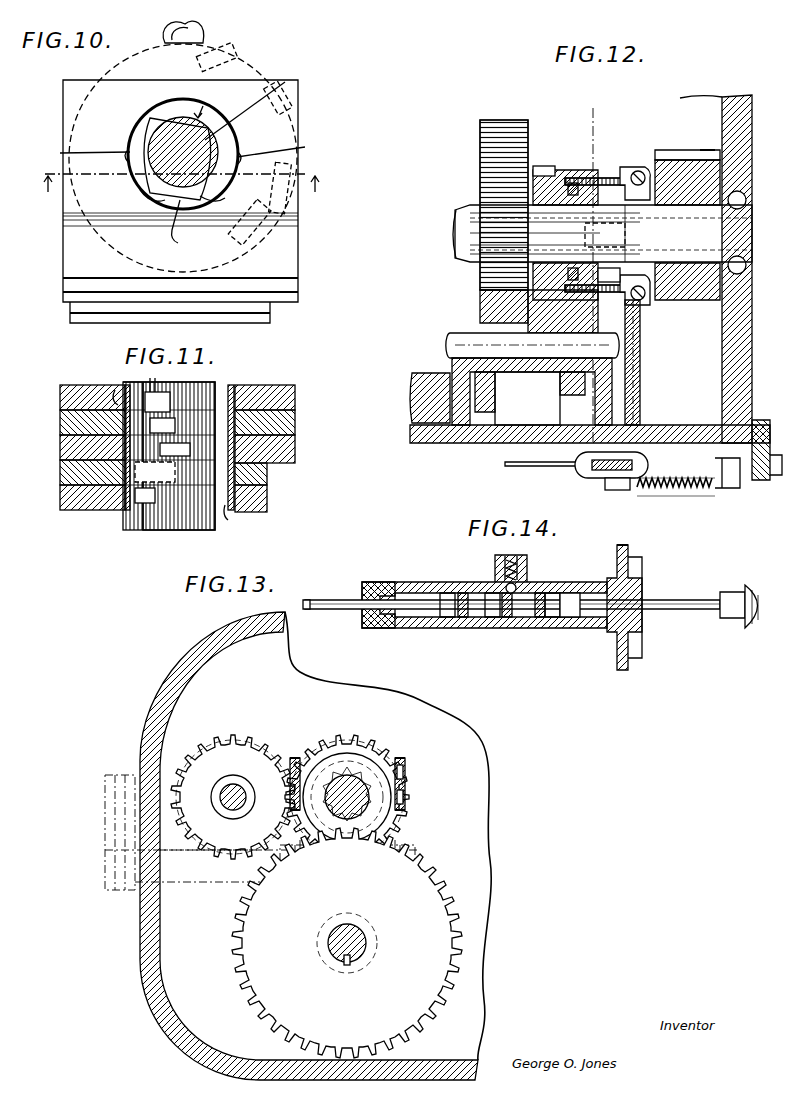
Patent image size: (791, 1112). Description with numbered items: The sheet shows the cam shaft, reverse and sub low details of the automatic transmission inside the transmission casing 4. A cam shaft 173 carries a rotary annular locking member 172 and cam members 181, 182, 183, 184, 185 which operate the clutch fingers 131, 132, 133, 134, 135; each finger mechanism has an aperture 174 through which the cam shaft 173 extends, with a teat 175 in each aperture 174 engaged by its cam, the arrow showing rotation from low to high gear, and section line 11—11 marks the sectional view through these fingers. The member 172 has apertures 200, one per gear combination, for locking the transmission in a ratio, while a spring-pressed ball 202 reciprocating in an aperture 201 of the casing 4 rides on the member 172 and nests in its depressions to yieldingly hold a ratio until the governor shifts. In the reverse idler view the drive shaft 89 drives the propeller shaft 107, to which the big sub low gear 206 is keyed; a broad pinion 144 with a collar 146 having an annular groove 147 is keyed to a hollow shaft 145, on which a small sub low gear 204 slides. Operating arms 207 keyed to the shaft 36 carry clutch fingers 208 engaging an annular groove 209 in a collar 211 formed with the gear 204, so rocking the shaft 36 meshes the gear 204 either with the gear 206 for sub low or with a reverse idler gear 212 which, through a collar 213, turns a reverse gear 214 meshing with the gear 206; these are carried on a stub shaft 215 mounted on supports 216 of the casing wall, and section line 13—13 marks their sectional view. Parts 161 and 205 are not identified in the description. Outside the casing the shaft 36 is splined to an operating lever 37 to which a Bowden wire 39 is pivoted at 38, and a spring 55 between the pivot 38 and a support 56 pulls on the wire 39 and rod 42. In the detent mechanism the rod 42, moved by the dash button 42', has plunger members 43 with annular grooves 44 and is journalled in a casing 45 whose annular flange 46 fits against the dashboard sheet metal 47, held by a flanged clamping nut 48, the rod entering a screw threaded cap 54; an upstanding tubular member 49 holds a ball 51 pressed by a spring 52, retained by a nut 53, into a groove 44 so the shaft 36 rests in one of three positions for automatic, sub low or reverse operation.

In FIG. 12, the transmission casing 4 is at (415, 430).
In FIG. 13, the transmission casing 4 is at (170, 672).
In FIG. 10, the section line 11— 11 is at (183, 188).
In FIG. 12, the section line 13— 13 is at (603, 113).
In FIG. 12, the shaft 36 is at (632, 160).
In FIG. 13, the shaft 36 is at (185, 890).
In FIG. 12, the operating lever 37 is at (640, 463).
In FIG. 13, the operating lever 37 is at (120, 797).
In FIG. 12, the pivot 38 is at (596, 480).
In FIG. 12, the Bowden wire 39 is at (528, 468).
In FIG. 14, the Bowden wire 39 is at (315, 590).
In FIG. 14, the rod 42 is at (512, 585).
In FIG. 14, the button 42' is at (741, 592).
In FIG. 14, the plunger members 43 is at (565, 640).
In FIG. 14, the annular grooves 44 is at (505, 650).
In FIG. 14, the casing 45 is at (400, 628).
In FIG. 14, the annular flange 46 is at (615, 668).
In FIG. 14, the sheet metal 47 is at (622, 545).
In FIG. 14, the flanged clamping nut 48 is at (640, 565).
In FIG. 14, the upstanding tubular member 49 is at (525, 565).
In FIG. 14, the ball 51 is at (518, 590).
In FIG. 14, the spring 52 is at (505, 560).
In FIG. 14, the nut 53 is at (508, 556).
In FIG. 14, the screw threaded cap 54 is at (365, 620).
In FIG. 12, the spring 55 is at (676, 476).
In FIG. 12, the support 56 is at (735, 490).
In FIG. 12, the drive shaft 89 is at (458, 233).
In FIG. 13, the drive shaft 89 is at (330, 752).
In FIG. 13, the propeller shaft 107 is at (362, 937).
In FIG. 10, the clutch finger 131 is at (272, 323).
In FIG. 11, the clutch finger 131 is at (267, 500).
In FIG. 10, the clutch finger 132 is at (272, 312).
In FIG. 11, the clutch finger 132 is at (267, 477).
In FIG. 10, the clutch finger 133 is at (298, 298).
In FIG. 11, the clutch finger 133 is at (295, 450).
In FIG. 10, the clutch finger 134 is at (298, 287).
In FIG. 11, the clutch finger 134 is at (295, 422).
In FIG. 10, the clutch finger 135 is at (292, 259).
In FIG. 11, the clutch finger 135 is at (295, 395).
In FIG. 12, the broad pinion 144 is at (688, 158).
In FIG. 12, the hollow shaft 145 is at (466, 262).
In FIG. 13, the hollow shaft 145 is at (342, 745).
In FIG. 12, the collar 146 is at (660, 165).
In FIG. 12, the annular groove 147 is at (612, 277).
In FIG. 10, the cam 161 is at (138, 144).
In FIG. 10, the annular locking member 172 is at (104, 76).
In FIG. 10, the cam shaft 173 is at (215, 122).
In FIG. 11, the cam shaft 173 is at (175, 530).
In FIG. 10, the aperture 174 is at (254, 101).
In FIG. 11, the aperture 174 is at (115, 390).
In FIG. 10, the teat 175 is at (183, 149).
In FIG. 11, the teat 175 is at (100, 528).
In FIG. 11, the cam member 181 is at (128, 515).
In FIG. 10, the cam member 182 is at (153, 115).
In FIG. 11, the cam member 182 is at (60, 472).
In FIG. 10, the cam member 183 is at (215, 198).
In FIG. 11, the cam member 183 is at (60, 450).
In FIG. 10, the cam member 184 is at (180, 228).
In FIG. 11, the cam member 184 is at (60, 424).
In FIG. 10, the cam member 185 is at (140, 196).
In FIG. 11, the cam member 185 is at (145, 398).
In FIG. 10, the apertures 200 is at (214, 70).
In FIG. 12, the aperture 201 is at (615, 300).
In FIG. 10, the ball 202 is at (205, 38).
In FIG. 12, the gear 204 is at (545, 165).
In FIG. 13, the gear 204 is at (405, 752).
In FIG. 12, the sleeve 205 is at (617, 235).
In FIG. 13, the sleeve 205 is at (380, 742).
In FIG. 12, the big sub low gear 206 is at (480, 152).
In FIG. 13, the big sub low gear 206 is at (432, 878).
In FIG. 12, the operating arms 207 is at (605, 178).
In FIG. 13, the operating arms 207 is at (288, 792).
In FIG. 12, the clutch fingers 208 is at (573, 182).
In FIG. 13, the clutch fingers 208 is at (405, 772).
In FIG. 12, the annular groove 209 is at (562, 165).
In FIG. 12, the collar 211 is at (592, 120).
In FIG. 13, the collar 211 is at (395, 806).
In FIG. 12, the reverse idler gear 212 is at (530, 378).
In FIG. 13, the reverse idler gear 212 is at (240, 738).
In FIG. 12, the collar 213 is at (527, 398).
In FIG. 12, the reverse gear 214 is at (480, 392).
In FIG. 13, the reverse gear 214 is at (214, 730).
In FIG. 12, the stub shaft 215 is at (450, 346).
In FIG. 13, the stub shaft 215 is at (238, 790).
In FIG. 12, the supports 216 is at (452, 378).
In FIG. 13, the supports 216 is at (160, 756).